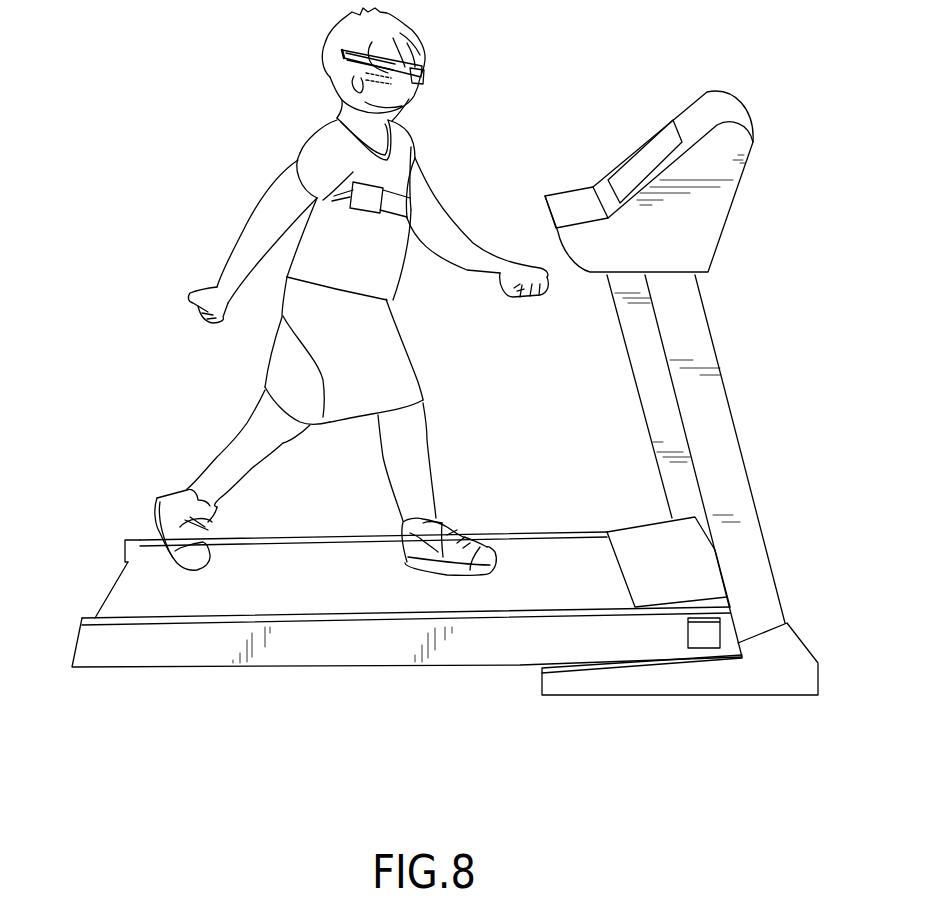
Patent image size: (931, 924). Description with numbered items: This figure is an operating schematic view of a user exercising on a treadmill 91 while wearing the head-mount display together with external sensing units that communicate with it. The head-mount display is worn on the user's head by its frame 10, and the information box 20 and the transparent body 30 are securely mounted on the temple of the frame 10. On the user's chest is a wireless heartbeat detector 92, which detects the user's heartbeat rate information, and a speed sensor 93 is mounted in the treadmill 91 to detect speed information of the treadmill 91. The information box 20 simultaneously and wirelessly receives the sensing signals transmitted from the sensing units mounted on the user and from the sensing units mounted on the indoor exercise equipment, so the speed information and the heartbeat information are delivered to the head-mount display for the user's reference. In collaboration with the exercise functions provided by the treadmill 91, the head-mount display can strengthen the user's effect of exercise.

The frame 10 is at (423, 75).
The information box 20 is at (343, 72).
The transparent body 30 is at (397, 83).
The treadmill 91 is at (680, 115).
The wireless heartbeat detector 92 is at (367, 205).
The speed sensor 93 is at (708, 632).